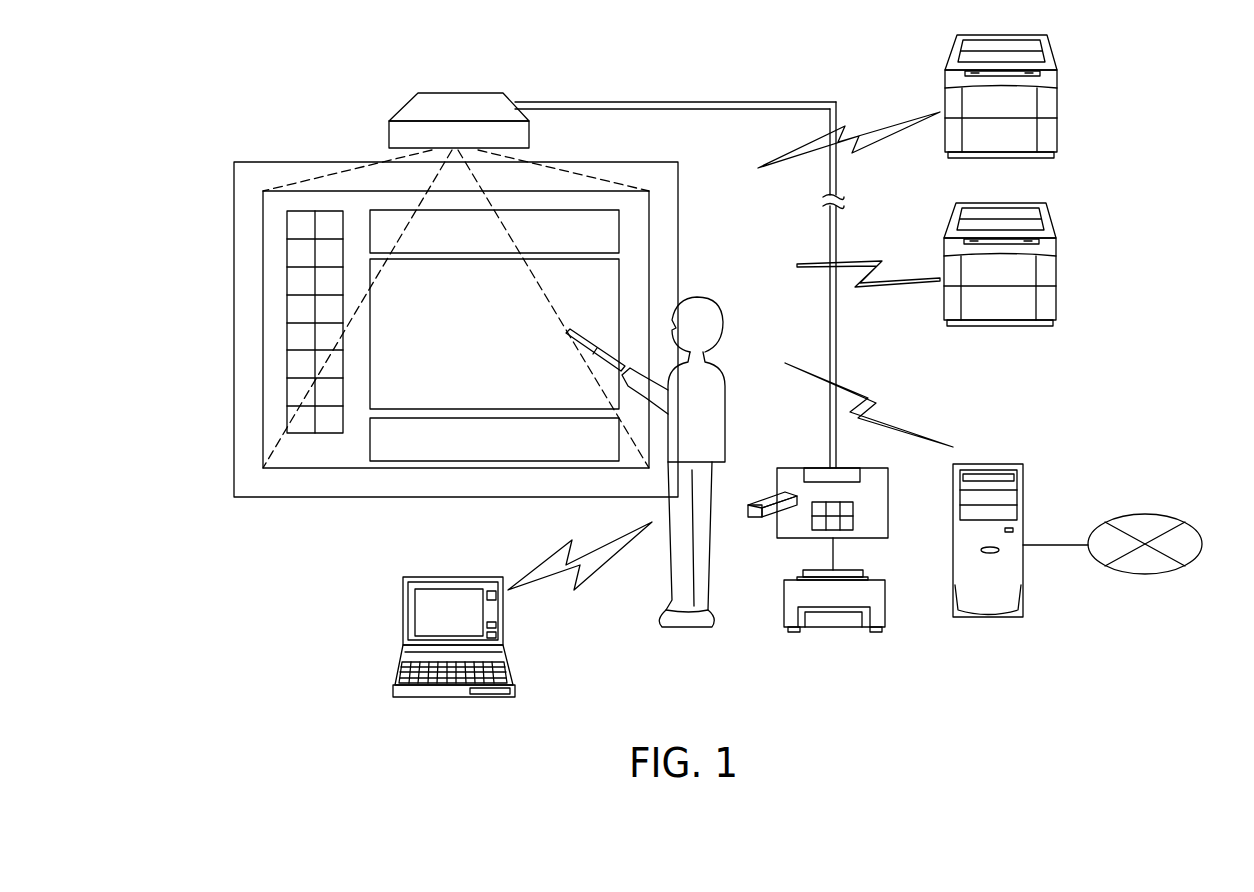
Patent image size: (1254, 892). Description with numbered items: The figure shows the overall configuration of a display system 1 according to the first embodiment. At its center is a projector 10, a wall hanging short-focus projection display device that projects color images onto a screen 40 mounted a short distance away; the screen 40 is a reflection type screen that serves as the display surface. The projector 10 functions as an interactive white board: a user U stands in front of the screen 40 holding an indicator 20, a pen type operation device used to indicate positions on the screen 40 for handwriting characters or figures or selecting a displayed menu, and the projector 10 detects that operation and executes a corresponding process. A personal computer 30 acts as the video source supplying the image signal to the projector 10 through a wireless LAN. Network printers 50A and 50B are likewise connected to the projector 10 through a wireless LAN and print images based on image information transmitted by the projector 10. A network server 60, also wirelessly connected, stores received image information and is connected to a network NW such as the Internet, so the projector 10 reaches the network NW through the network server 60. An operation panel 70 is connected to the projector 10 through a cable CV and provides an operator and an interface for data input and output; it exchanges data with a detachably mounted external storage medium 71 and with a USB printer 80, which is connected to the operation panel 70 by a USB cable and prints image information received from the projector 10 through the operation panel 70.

The display system 1 is at (200, 138).
The projector 10 is at (400, 113).
The indicator 20 is at (576, 346).
The personal computer (PC) 30 is at (403, 608).
The screen 40 is at (234, 273).
The network printer 50A is at (1058, 108).
The network printer 50B is at (1058, 258).
The network server 60 is at (998, 465).
The operation panel 70 is at (810, 468).
The external storage medium 71 is at (753, 519).
The USB printer 80 is at (880, 622).
The cable CV is at (833, 102).
The network NW is at (1138, 515).
The user U is at (718, 362).